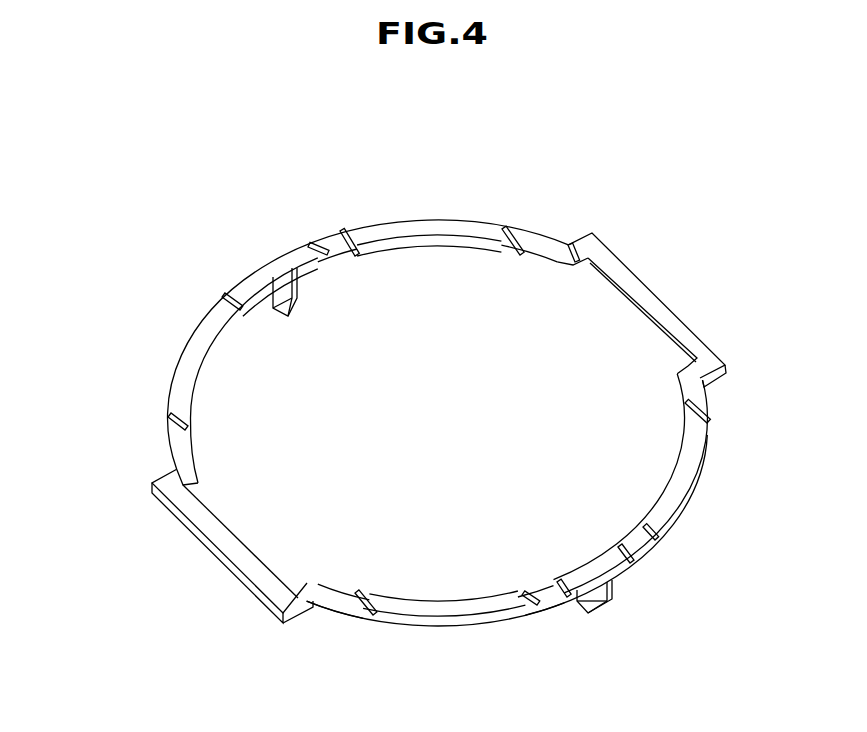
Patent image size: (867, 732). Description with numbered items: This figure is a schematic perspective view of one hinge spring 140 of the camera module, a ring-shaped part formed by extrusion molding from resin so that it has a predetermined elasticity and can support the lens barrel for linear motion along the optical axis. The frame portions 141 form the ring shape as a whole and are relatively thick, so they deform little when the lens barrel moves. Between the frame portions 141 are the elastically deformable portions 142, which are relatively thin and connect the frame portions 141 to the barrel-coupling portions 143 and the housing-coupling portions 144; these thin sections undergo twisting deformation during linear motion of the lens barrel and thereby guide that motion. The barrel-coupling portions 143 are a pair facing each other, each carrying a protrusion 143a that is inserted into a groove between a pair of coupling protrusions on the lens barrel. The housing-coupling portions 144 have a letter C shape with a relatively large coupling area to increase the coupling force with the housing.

The hinge spring 140 is at (145, 125).
The frame portion 141 is at (426, 226).
The elastically deformable portion 142 is at (236, 298).
The barrel-coupling portion 143 is at (270, 262).
The protrusion 143a is at (283, 288).
The housing-coupling portion 144 is at (644, 297).